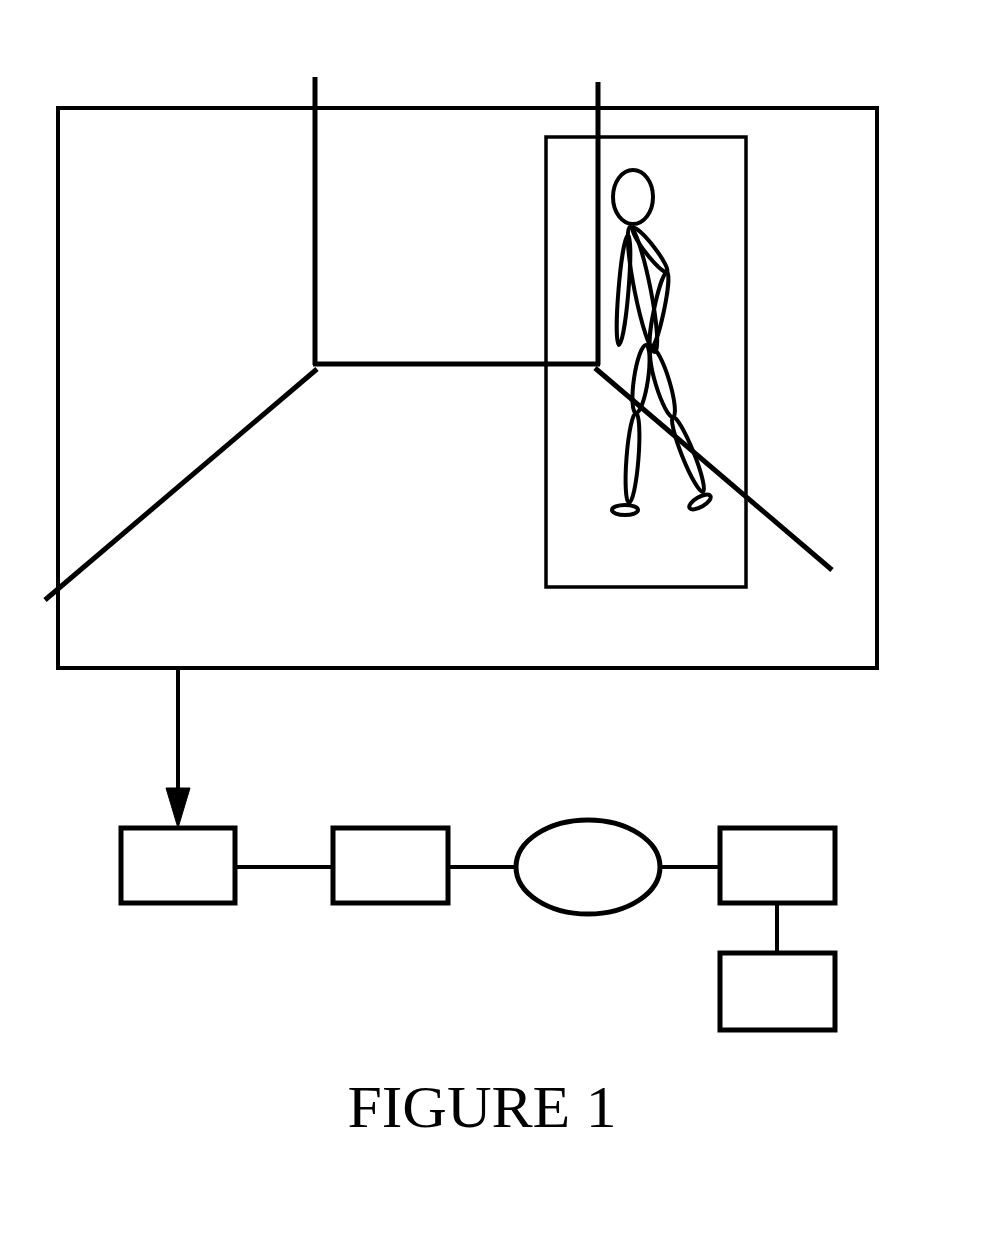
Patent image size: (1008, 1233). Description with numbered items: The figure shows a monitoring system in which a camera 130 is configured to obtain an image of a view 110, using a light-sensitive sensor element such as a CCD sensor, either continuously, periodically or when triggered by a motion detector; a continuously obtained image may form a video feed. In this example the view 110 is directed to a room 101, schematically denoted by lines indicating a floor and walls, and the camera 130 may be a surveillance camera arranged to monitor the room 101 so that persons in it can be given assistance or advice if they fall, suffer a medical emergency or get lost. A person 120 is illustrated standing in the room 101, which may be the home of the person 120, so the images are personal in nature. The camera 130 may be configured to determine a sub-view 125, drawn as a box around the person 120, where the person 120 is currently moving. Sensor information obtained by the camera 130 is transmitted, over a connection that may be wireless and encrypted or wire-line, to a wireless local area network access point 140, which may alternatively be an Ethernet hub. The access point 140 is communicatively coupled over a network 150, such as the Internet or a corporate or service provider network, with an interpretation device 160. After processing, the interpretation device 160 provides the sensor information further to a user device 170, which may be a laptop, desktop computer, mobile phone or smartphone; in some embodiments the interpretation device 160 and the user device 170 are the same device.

The room 101 is at (198, 466).
The view 110 is at (440, 668).
The person 120 is at (667, 262).
The sub-view 125 is at (678, 137).
The camera 130 is at (178, 865).
The wireless local area network access point 140 is at (390, 865).
The network 150 is at (588, 867).
The interpretation device 160 is at (777, 865).
The user device 170 is at (777, 991).